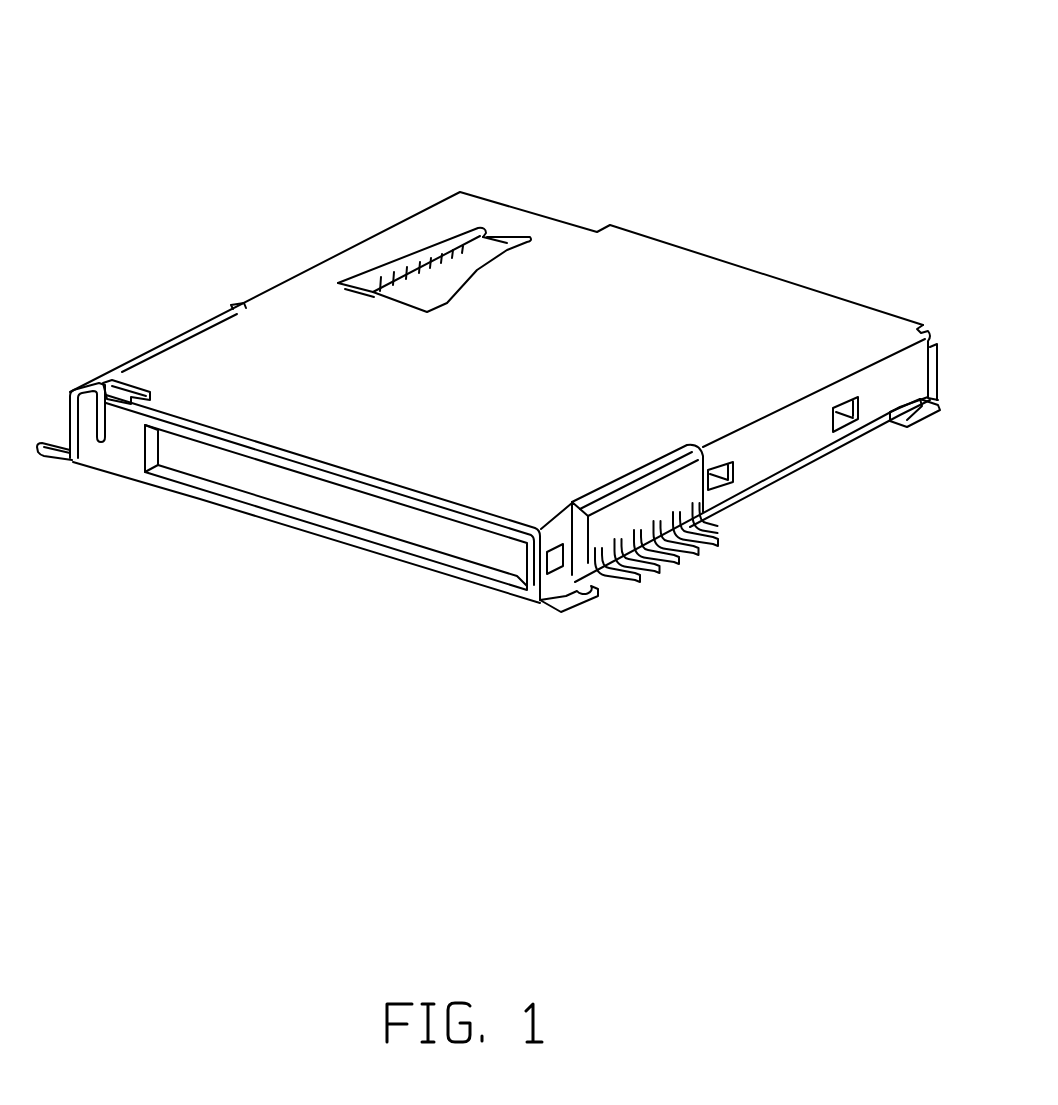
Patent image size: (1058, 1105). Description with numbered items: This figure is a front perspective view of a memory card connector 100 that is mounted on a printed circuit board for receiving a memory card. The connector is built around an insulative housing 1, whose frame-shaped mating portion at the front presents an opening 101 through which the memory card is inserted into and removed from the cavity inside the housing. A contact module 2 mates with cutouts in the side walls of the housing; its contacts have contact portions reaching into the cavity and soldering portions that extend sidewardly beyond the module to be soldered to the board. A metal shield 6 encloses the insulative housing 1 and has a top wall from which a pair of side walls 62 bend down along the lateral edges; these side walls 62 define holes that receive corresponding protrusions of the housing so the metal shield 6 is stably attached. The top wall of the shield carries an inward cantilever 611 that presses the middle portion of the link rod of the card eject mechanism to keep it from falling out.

The memory card connector 100 is at (487, 59).
The insulative housing 1 is at (122, 445).
The opening 101 is at (308, 493).
The contact module 2 is at (660, 563).
The metal shield 6 is at (296, 343).
The inward cantilever 611 is at (427, 287).
The side walls 62 is at (771, 443).